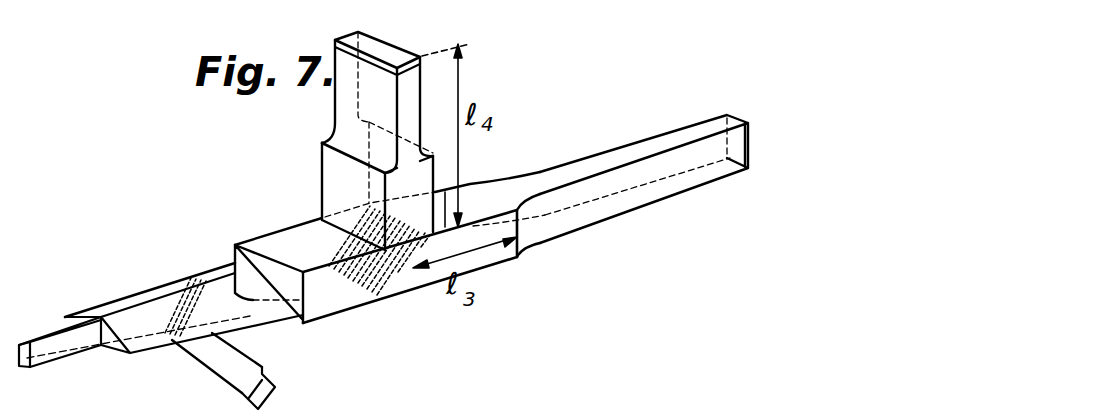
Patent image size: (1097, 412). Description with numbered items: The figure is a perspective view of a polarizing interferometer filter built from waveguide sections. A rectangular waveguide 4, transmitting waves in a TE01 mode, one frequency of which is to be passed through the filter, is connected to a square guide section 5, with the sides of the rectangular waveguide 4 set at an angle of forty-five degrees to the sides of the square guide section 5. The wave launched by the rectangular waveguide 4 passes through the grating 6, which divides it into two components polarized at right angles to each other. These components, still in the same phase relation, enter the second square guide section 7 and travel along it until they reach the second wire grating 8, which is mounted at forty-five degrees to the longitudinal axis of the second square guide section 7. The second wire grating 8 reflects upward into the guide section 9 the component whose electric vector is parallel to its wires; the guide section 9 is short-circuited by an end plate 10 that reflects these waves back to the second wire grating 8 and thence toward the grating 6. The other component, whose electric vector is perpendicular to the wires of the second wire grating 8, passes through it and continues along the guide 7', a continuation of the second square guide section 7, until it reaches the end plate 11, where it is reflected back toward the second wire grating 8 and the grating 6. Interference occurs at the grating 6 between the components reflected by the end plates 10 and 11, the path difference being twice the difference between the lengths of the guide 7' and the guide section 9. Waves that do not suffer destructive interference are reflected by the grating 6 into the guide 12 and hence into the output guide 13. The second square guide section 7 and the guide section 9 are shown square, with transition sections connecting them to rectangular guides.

The rectangular waveguide 4 is at (42, 338).
The square guide section 5 is at (116, 302).
The grating 6 is at (175, 300).
The second square guide section 7 is at (376, 257).
The guide 7' is at (490, 198).
The second wire grating 8 is at (362, 295).
The guide section 9 is at (330, 163).
The end plate 10 is at (348, 37).
The end plate 11 is at (740, 122).
The guide 12 is at (216, 376).
The output guide 13 is at (273, 384).